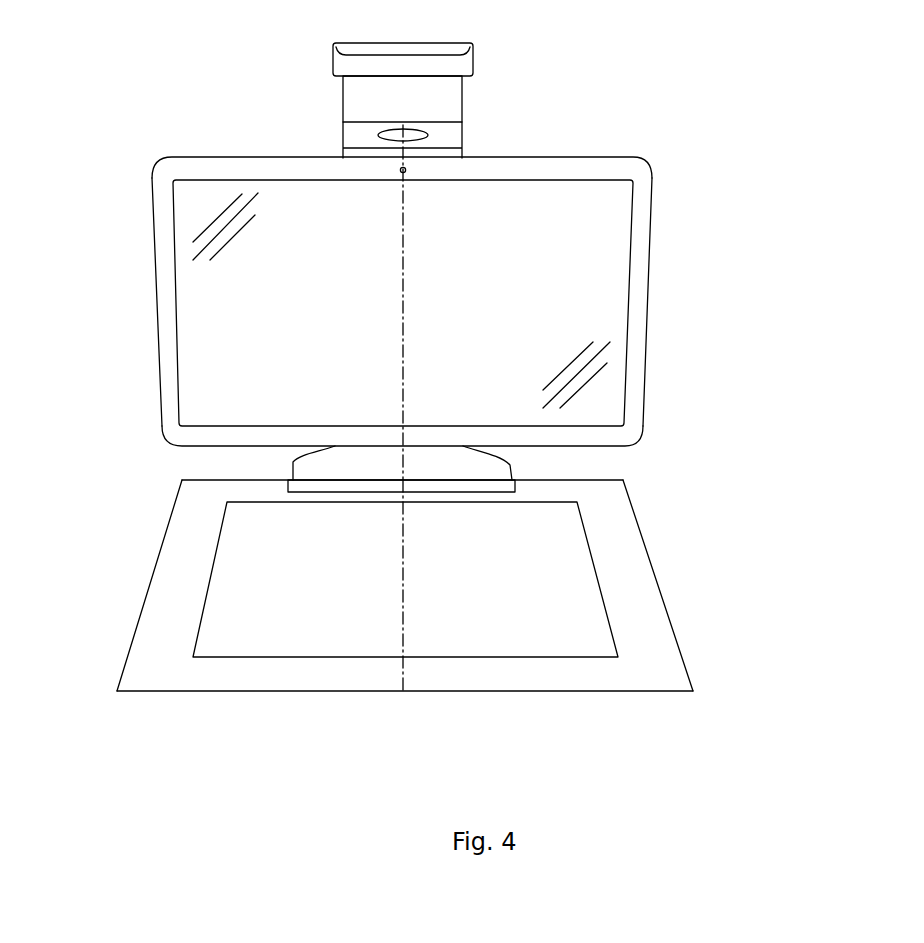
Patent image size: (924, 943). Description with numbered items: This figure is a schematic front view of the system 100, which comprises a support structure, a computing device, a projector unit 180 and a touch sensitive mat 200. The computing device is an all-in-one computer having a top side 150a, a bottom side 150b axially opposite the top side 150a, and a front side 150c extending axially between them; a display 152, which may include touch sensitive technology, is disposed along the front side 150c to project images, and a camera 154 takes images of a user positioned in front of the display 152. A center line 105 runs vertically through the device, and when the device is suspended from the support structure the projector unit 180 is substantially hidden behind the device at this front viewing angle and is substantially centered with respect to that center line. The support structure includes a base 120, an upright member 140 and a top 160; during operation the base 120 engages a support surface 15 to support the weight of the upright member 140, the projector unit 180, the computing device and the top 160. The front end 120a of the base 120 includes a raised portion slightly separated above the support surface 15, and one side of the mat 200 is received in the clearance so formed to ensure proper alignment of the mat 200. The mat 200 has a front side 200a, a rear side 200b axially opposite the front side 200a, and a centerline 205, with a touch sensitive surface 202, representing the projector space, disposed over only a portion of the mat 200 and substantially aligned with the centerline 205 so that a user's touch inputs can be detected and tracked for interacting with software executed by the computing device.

The system 100 is at (720, 250).
The top 160 is at (473, 39).
The upright member 140 is at (342, 97).
The projector unit 180 is at (342, 148).
The camera 154 is at (406, 168).
The top side 150a is at (533, 158).
The bottom side 150b is at (572, 447).
The front side 150c is at (188, 296).
The display 152 is at (508, 257).
The central axis 105 is at (403, 212).
The base 120 is at (296, 462).
The front end 120a is at (323, 495).
The touch sensitive mat 200 is at (628, 632).
The front side 200a is at (555, 692).
The rear side 200b is at (283, 471).
The touch sensitive surface 202 is at (582, 573).
The centerline 205 is at (403, 523).
The support surface 15 is at (873, 598).